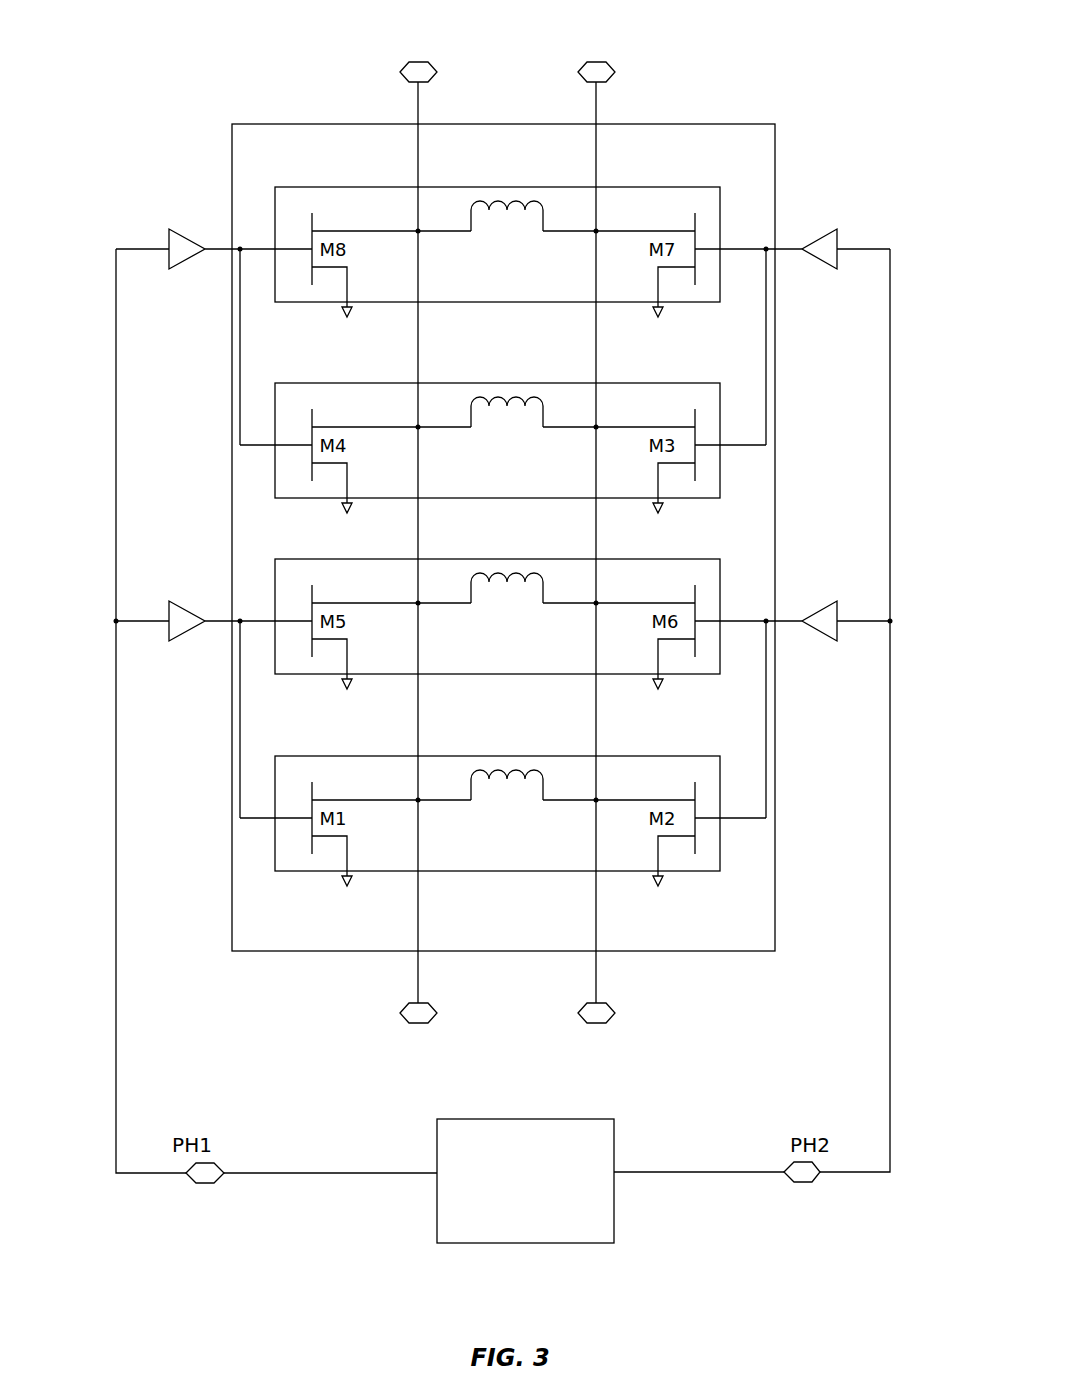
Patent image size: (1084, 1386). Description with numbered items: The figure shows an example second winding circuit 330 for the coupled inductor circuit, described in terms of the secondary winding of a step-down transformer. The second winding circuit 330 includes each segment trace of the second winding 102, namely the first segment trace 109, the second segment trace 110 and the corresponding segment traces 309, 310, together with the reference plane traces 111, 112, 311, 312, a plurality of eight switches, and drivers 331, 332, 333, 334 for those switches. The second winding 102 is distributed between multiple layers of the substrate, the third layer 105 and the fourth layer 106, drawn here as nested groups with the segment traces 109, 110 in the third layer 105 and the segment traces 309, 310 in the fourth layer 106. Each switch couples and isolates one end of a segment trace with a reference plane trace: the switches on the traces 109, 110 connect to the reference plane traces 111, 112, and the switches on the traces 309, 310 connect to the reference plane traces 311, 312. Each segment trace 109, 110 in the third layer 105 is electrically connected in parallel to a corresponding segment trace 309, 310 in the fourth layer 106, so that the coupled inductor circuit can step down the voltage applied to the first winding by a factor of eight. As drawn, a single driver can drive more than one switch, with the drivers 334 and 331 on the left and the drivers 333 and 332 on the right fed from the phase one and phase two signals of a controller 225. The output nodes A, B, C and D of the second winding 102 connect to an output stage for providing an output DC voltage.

The second winding 102 is at (303, 952).
The third layer 105 is at (330, 382).
The fourth layer 106 is at (347, 186).
The first segment trace 109 is at (488, 779).
The second segment trace 110 is at (488, 406).
The first reference plane trace 111 is at (347, 515).
The second reference plane trace 112 is at (658, 515).
The controller 225 is at (526, 1243).
The segment trace 309 is at (488, 582).
The segment trace 310 is at (488, 210).
The reference plane trace 311 is at (347, 319).
The reference plane trace 312 is at (658, 319).
The second winding circuit 330 is at (694, 46).
The driver 331 is at (195, 615).
The driver 332 is at (817, 613).
The driver 333 is at (818, 232).
The driver 334 is at (188, 237).